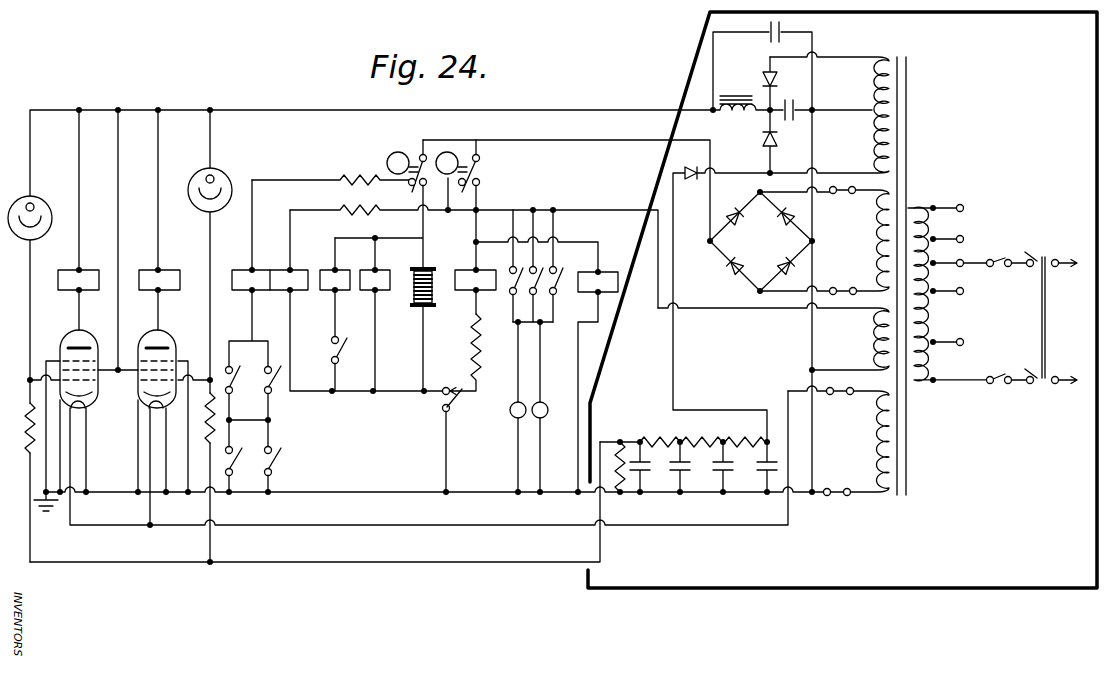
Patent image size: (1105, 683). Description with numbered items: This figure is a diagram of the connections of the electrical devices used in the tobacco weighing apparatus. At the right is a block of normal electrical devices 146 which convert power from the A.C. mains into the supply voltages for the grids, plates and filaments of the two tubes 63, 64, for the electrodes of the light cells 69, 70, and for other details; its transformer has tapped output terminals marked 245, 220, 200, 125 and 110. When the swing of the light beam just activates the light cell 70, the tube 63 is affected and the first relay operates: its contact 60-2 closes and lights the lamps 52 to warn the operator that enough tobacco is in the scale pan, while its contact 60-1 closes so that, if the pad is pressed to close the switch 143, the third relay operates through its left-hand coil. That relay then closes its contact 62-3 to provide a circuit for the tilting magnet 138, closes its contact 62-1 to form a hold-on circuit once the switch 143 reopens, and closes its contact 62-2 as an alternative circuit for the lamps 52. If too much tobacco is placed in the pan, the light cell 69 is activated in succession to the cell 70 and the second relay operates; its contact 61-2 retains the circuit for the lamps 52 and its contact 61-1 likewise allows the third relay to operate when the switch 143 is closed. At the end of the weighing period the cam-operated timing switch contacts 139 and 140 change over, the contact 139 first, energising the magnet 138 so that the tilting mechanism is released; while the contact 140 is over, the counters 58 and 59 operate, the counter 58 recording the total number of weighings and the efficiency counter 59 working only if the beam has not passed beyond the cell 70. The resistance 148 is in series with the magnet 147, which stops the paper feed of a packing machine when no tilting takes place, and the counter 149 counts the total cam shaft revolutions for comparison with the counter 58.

The light cell 70 is at (41, 199).
The light cell 69 is at (226, 174).
The valve or tube 63 is at (96, 392).
The valve or tube 64 is at (146, 340).
The contact 60-1 is at (240, 366).
The contact 61-1 is at (281, 372).
The switch 143 is at (282, 456).
The contact 62-1 is at (243, 452).
The electric counter 59 is at (341, 283).
The electric counter 58 is at (382, 283).
The tilting magnet 138 is at (414, 292).
The magnet 147 is at (468, 288).
The resistance 148 is at (477, 342).
The timing switch contact 140 is at (398, 152).
The timing switch contact 139 is at (447, 152).
The contact 60-2 is at (514, 275).
The contact 61-2 is at (536, 290).
The contact 62-2 is at (562, 268).
The electric counter 149 is at (610, 277).
The lamps 52 is at (543, 402).
The contact 62-3 is at (450, 402).
The electrical devices 146 is at (842, 318).
The 245-volt transformer tap 245 is at (963, 208).
The 220-volt transformer tap 220 is at (968, 240).
The 200-volt transformer tap 200 is at (1003, 271).
The 125-volt transformer tap 125 is at (968, 294).
The 110-volt transformer tap 110 is at (968, 346).